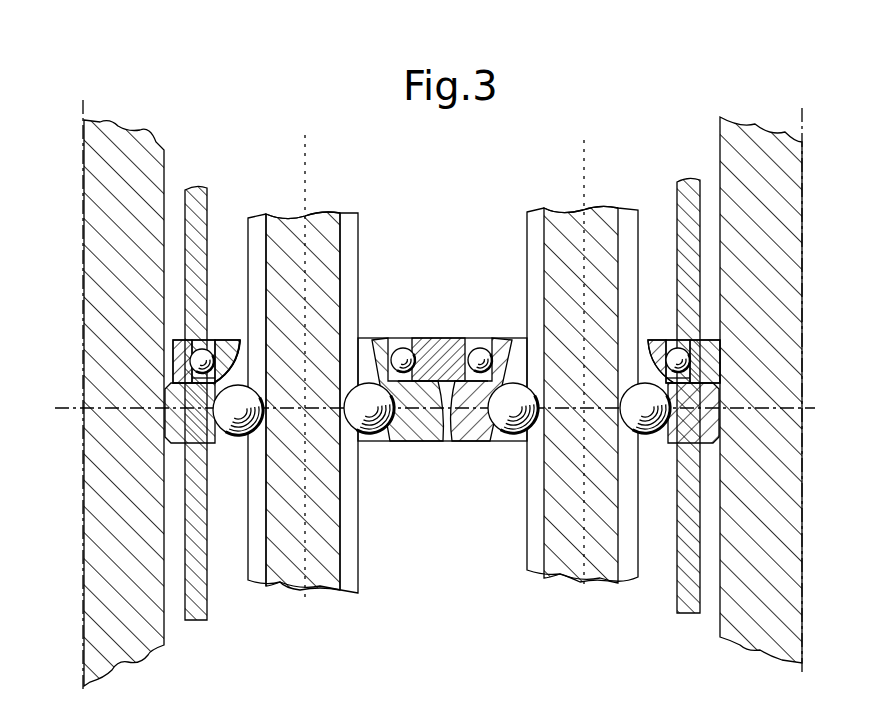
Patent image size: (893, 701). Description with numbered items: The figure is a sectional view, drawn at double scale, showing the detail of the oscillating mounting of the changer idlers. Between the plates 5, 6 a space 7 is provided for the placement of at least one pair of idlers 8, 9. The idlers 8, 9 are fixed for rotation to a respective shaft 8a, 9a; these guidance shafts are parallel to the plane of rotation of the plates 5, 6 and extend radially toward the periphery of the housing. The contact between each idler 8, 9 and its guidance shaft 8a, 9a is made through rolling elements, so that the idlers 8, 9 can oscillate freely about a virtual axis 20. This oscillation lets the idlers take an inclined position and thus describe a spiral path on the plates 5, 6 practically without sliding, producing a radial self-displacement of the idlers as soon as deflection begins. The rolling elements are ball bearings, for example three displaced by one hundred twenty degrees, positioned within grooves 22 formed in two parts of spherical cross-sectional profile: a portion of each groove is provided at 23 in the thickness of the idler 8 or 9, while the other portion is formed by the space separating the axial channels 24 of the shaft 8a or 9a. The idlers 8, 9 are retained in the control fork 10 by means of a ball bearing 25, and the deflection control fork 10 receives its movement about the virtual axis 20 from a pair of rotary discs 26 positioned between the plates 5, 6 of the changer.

The plate 5 is at (100, 538).
The plate 6 is at (785, 503).
The space 7 is at (462, 222).
The idler 8 is at (415, 428).
The shaft 8a is at (305, 578).
The idler 9 is at (467, 428).
The shaft 9a is at (574, 565).
The control fork 10 is at (452, 346).
The virtual axis 20 is at (746, 408).
The groove 22 is at (232, 377).
The groove portion 23 is at (225, 440).
The axial channel 24 is at (350, 298).
The ball bearing 25 is at (177, 362).
The rotary disc 26 is at (200, 606).